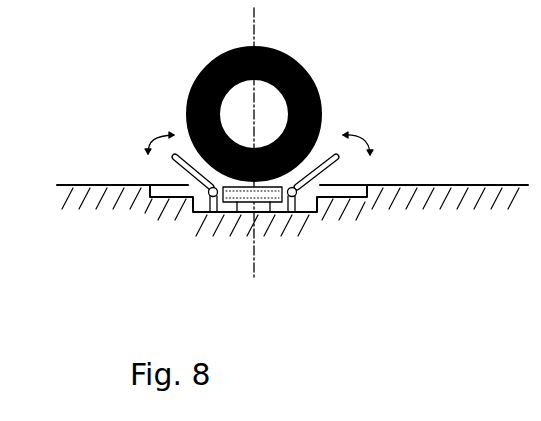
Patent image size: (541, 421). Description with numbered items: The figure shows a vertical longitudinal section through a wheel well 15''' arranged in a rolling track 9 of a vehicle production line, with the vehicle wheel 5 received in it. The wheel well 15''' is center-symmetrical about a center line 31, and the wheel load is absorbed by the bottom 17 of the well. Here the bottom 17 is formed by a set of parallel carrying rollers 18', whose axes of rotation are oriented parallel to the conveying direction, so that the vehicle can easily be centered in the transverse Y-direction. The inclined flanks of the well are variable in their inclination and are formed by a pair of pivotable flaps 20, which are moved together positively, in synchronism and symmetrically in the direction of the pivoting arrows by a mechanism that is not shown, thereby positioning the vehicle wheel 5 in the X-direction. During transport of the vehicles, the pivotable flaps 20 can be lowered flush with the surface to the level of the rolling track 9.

The center line 31 is at (255, 8).
The vehicle wheel 5 is at (315, 83).
The rolling track 9 is at (471, 182).
The pivotable flaps 20 is at (193, 176).
The bottom of the wheel well 17 is at (316, 176).
The wheel well 15''' is at (282, 253).
The carrying rollers 18' is at (237, 262).